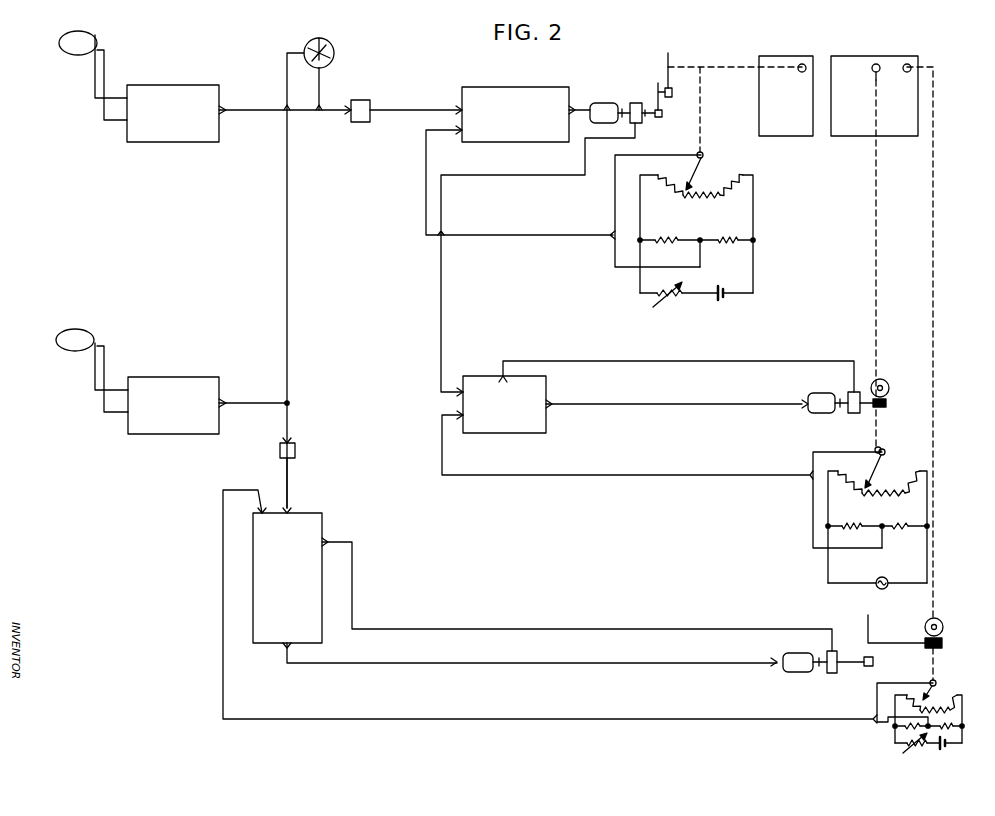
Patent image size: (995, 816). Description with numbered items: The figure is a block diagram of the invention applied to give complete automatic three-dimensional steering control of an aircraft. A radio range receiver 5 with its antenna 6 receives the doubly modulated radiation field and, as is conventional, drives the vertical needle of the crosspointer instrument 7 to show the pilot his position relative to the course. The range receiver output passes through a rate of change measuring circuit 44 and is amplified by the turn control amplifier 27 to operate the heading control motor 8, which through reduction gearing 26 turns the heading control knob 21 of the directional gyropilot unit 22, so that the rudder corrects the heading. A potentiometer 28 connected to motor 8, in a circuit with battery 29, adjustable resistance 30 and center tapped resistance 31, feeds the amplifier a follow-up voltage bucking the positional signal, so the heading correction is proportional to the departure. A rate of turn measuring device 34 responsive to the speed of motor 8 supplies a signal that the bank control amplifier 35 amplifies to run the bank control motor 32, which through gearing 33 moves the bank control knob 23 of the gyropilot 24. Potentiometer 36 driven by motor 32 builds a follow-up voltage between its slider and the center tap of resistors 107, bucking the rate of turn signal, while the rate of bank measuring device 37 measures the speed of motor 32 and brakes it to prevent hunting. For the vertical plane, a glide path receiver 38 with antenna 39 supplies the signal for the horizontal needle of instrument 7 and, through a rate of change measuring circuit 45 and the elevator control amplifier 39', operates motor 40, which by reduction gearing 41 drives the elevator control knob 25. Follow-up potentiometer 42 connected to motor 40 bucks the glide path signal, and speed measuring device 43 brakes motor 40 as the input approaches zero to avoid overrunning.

The radio range receiver 5 is at (200, 91).
The antenna 6 is at (60, 44).
The crosspointer instrument 7 is at (330, 44).
The heading control motor 8 is at (606, 108).
The heading control knob 21 is at (802, 64).
The directional gyropilot unit 22 is at (780, 56).
The bank control knob 23 is at (876, 64).
The gyropilot 24 is at (840, 60).
The elevator control knob 25 is at (907, 64).
The reduction gearing 26 is at (658, 90).
The turn control amplifier 27 is at (480, 87).
The potentiometer 28 is at (696, 225).
The battery 29 is at (720, 300).
The adjustable resistance 30 is at (670, 300).
The center tapped resistance 31 is at (722, 236).
The bank control motor 32 is at (829, 398).
The gearing 33 is at (886, 382).
The rate of turn measuring device 34 is at (640, 99).
The bank control amplifier 35 is at (476, 376).
The potentiometer 36 is at (877, 519).
The rate of bank measuring device 37 is at (853, 414).
The glide path receiver 38 is at (208, 382).
The antenna 39 is at (82, 364).
The elevator control amplifier 39' is at (290, 568).
The motor 40 is at (808, 647).
The reduction gearing 41 is at (866, 646).
The follow-up potentiometer 42 is at (928, 716).
The speed measuring device 43 is at (835, 673).
The rate of change measuring circuit 44 is at (362, 102).
The rate of change measuring circuit 45 is at (292, 450).
The resistors 107 is at (904, 522).